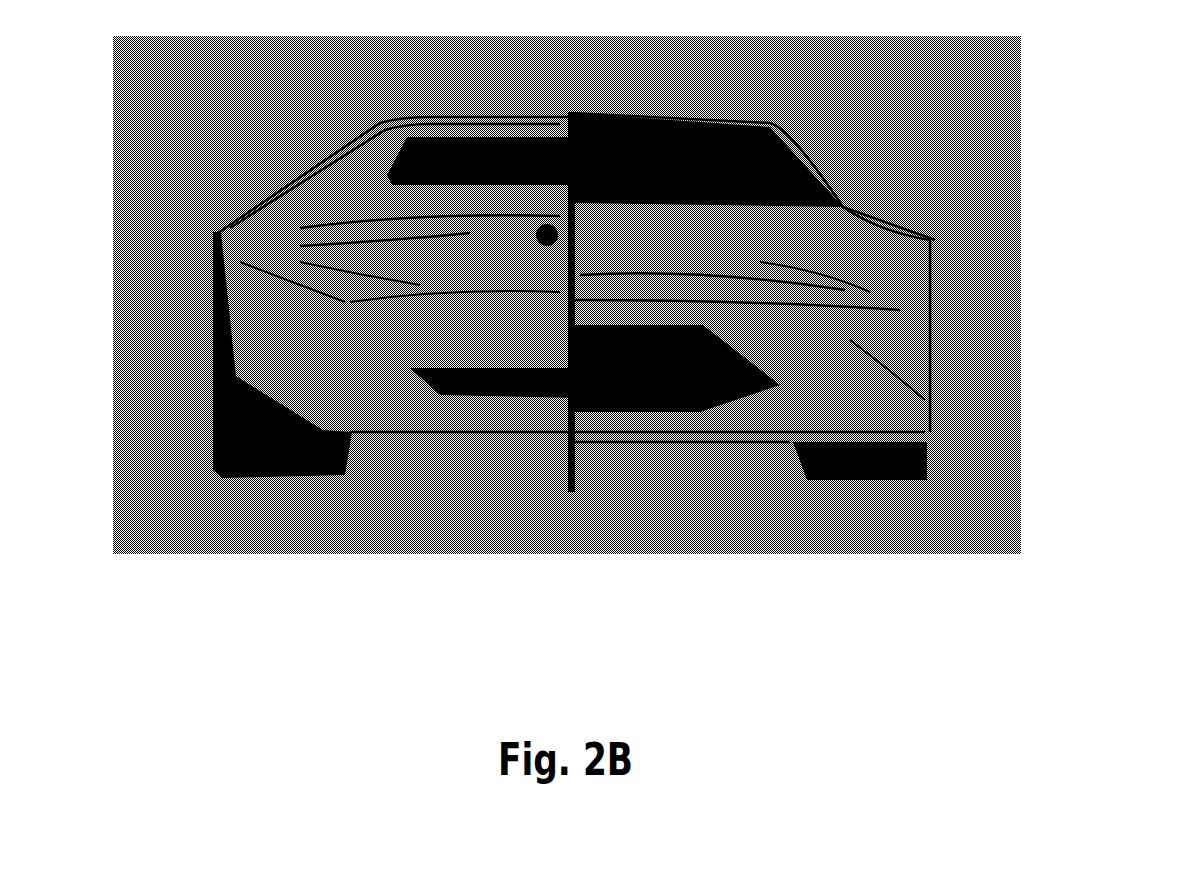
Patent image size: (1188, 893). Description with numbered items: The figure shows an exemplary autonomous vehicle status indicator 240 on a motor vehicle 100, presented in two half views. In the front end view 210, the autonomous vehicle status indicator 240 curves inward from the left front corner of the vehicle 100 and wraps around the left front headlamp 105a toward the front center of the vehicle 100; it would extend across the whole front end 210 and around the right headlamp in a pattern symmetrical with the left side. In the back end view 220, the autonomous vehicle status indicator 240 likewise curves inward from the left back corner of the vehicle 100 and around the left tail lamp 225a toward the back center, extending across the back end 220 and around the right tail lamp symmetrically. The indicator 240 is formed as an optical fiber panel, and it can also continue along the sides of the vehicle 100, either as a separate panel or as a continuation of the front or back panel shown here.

The motor vehicle 100 is at (522, 268).
The headlamp assembly 105a is at (827, 278).
The front end view 210 is at (927, 98).
The back end view 220 is at (235, 96).
The rear lamp assembly 225a is at (345, 208).
The autonomous vehicle status indicator 240 is at (343, 300).